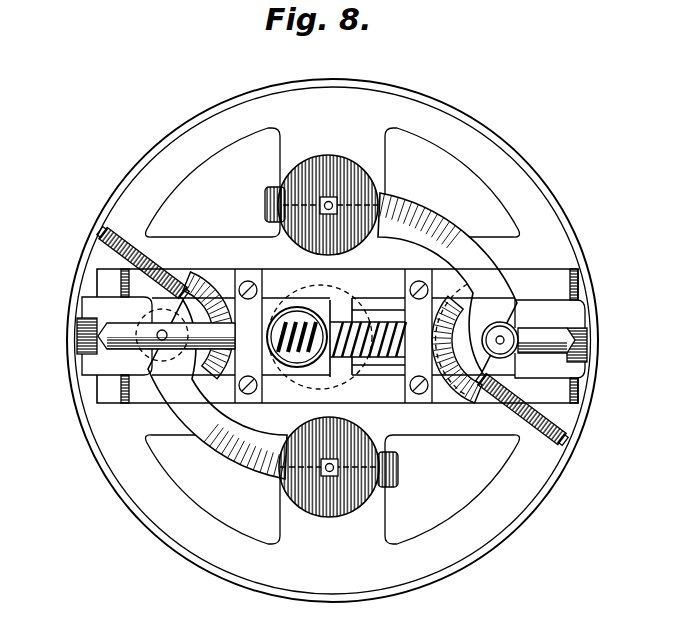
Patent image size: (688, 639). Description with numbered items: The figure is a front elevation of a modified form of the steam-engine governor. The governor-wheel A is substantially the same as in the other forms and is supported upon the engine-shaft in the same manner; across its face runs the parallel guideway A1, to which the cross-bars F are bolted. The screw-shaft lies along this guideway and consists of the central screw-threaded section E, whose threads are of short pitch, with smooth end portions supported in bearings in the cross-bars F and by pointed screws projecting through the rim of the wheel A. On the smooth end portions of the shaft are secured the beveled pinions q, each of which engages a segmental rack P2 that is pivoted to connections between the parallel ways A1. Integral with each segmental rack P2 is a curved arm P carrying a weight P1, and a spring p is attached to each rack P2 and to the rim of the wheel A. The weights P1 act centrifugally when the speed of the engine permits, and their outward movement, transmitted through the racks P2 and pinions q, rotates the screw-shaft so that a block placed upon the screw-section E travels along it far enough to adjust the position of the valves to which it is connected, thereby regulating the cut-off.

The governor-wheel A is at (332, 340).
The parallel guideway A1 is at (537, 283).
The arm P is at (422, 229).
The weight P1 is at (351, 163).
The segmental rack P2 is at (207, 283).
The spring p is at (103, 238).
The beveled pinion q is at (238, 299).
The cross-bar F is at (253, 362).
The central screw-threaded section E is at (373, 366).